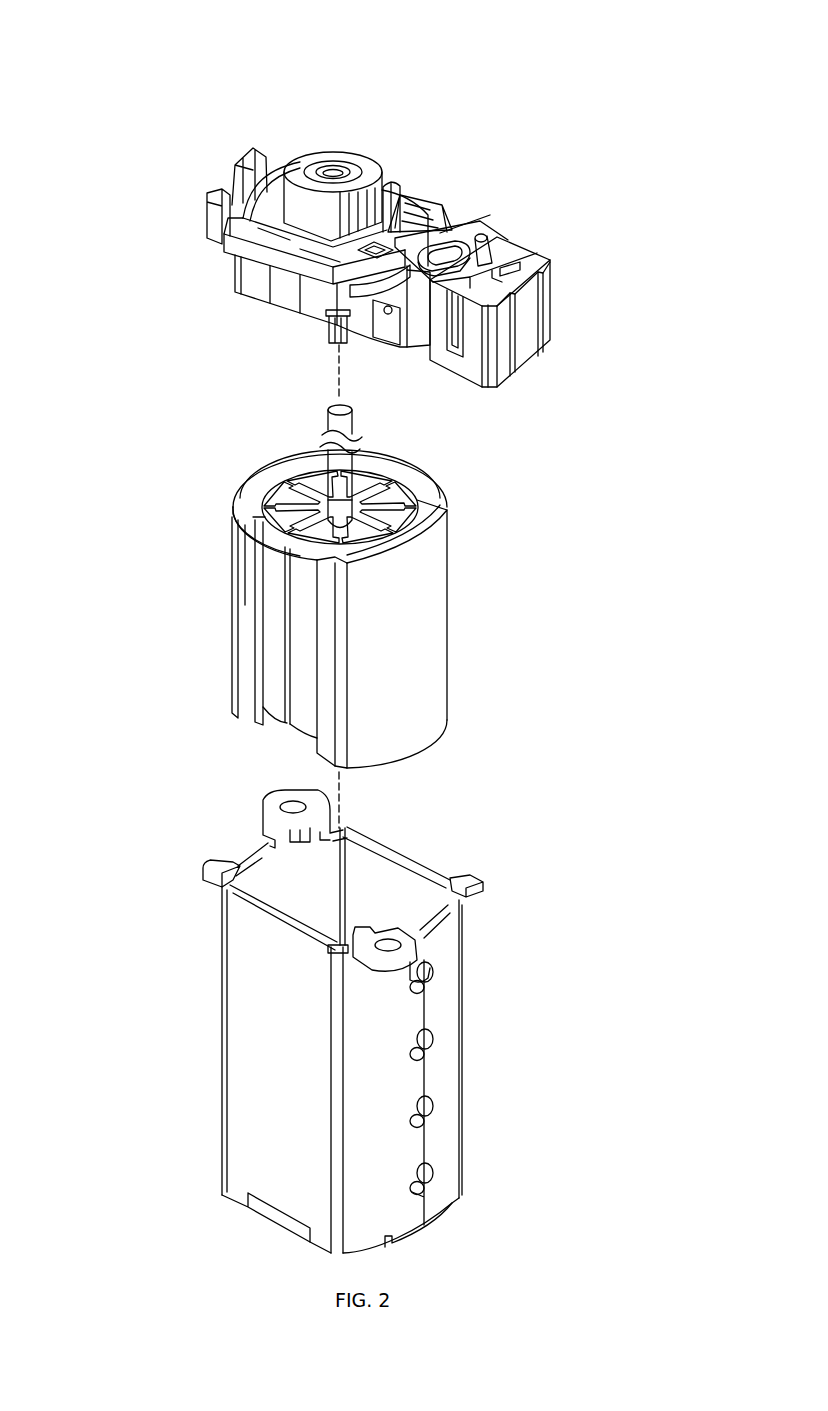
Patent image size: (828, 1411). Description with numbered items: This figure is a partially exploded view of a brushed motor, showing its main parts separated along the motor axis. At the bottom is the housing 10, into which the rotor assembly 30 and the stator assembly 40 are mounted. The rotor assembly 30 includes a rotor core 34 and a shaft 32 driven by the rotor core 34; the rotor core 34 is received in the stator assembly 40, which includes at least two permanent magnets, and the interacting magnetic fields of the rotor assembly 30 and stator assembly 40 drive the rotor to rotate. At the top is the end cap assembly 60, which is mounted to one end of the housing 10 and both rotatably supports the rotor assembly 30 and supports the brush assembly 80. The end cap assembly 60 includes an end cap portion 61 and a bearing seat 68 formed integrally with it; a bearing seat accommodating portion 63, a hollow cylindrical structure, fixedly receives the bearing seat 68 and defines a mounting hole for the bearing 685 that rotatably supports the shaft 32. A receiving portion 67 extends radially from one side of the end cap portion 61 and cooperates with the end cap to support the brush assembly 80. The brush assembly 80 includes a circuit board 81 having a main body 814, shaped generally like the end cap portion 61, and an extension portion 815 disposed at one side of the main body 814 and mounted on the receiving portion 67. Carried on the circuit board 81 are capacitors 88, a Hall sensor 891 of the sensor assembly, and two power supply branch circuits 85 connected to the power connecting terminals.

The housing 10 is at (443, 1045).
The rotor assembly 30 is at (113, 447).
The shaft 32 is at (310, 473).
The rotor core 34 is at (277, 580).
The stator assembly 40 is at (417, 630).
The end cap assembly 60 is at (113, 240).
The end cap portion 61 is at (240, 280).
The bearing seat accommodating portion 63 is at (240, 238).
The bearing seat 68 is at (332, 312).
The bearing 685 is at (317, 150).
The Hall sensor 891 is at (395, 185).
The brush assembly 80 is at (680, 172).
The circuit board 81 is at (520, 133).
The main body 814 is at (452, 212).
The extension portion 815 is at (485, 237).
The capacitors 88 is at (545, 243).
The power supply branch circuits 85 is at (445, 217).
The receiving portion 67 is at (530, 327).